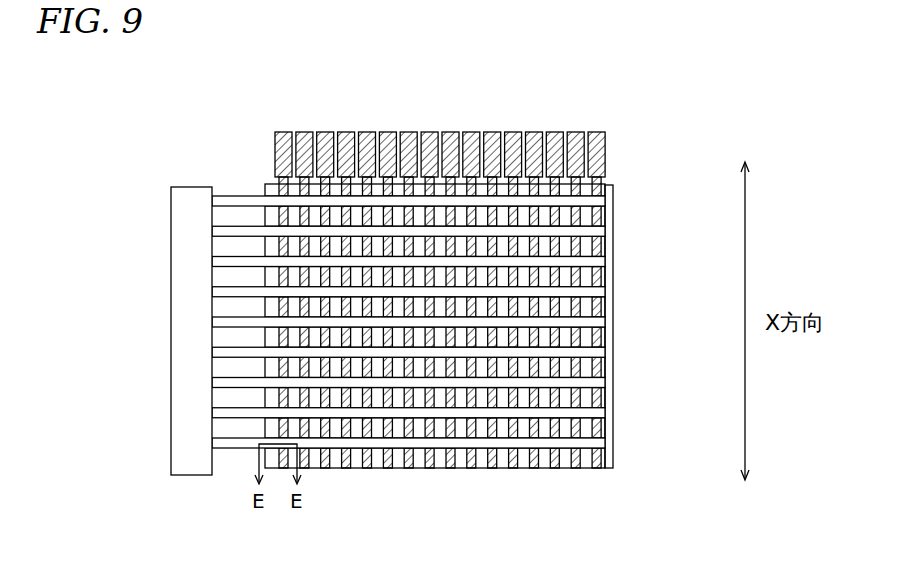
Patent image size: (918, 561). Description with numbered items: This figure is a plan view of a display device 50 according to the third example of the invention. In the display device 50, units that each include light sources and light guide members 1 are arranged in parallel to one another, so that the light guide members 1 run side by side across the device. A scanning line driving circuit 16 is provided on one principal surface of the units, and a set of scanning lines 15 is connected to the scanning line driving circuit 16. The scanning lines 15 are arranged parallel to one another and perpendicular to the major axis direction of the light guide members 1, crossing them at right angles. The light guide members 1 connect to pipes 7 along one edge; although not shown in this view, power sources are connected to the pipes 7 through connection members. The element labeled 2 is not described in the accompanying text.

The light guide member 1 is at (612, 187).
The second electrode 2 is at (612, 438).
The pipe 7 is at (600, 132).
The scanning line 15 is at (232, 197).
The scanning line driving circuit 16 is at (178, 272).
The display device 50 is at (624, 481).